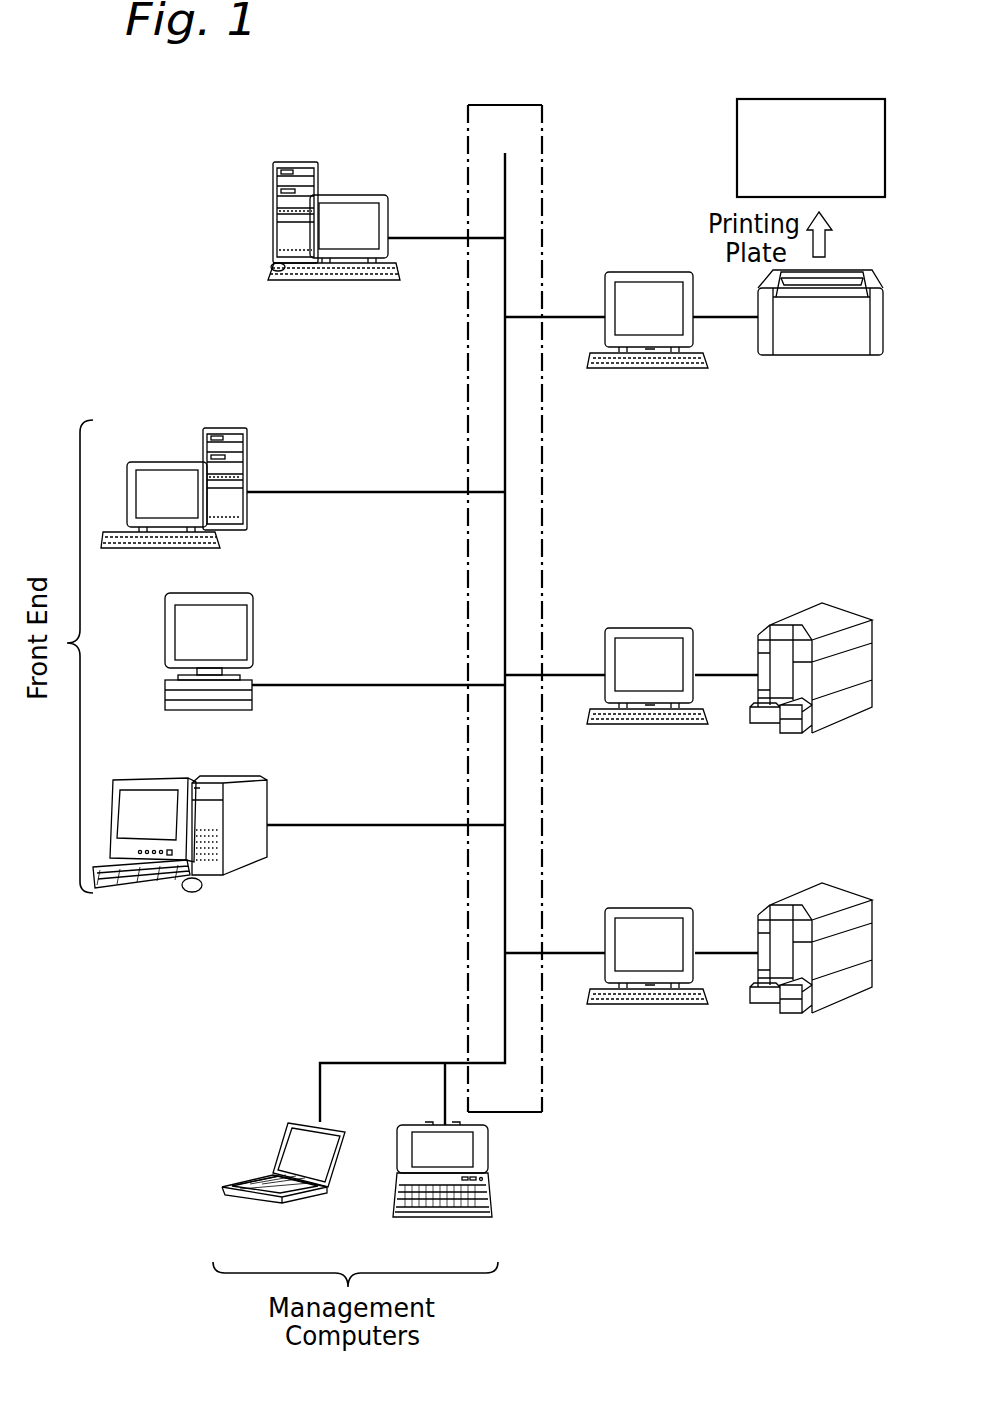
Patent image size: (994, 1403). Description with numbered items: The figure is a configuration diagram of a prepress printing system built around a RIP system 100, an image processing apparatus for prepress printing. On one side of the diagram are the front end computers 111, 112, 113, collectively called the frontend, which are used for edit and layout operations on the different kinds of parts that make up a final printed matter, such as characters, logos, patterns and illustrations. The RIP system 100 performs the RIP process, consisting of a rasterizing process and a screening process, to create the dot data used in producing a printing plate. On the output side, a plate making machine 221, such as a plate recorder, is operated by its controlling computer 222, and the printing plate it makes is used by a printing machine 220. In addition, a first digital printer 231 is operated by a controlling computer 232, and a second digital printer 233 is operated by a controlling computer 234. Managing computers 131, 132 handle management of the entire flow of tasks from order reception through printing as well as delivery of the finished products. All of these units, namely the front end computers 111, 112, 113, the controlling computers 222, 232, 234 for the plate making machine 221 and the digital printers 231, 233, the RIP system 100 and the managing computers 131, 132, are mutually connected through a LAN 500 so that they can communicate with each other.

The RIP system 100 is at (342, 282).
The front end computer 111 is at (168, 460).
The front end computer 112 is at (165, 637).
The front end computer 113 is at (248, 868).
The managing computer 131 is at (288, 1200).
The managing computer 132 is at (445, 1220).
The printing machine 220 is at (737, 148).
The plate making machine 221 is at (812, 355).
The controlling computer 222 is at (648, 370).
The first digital printer 231 is at (807, 604).
The controlling computer 232 is at (645, 624).
The second digital printer 233 is at (807, 884).
The controlling computer 234 is at (647, 904).
The LAN 500 is at (583, 527).